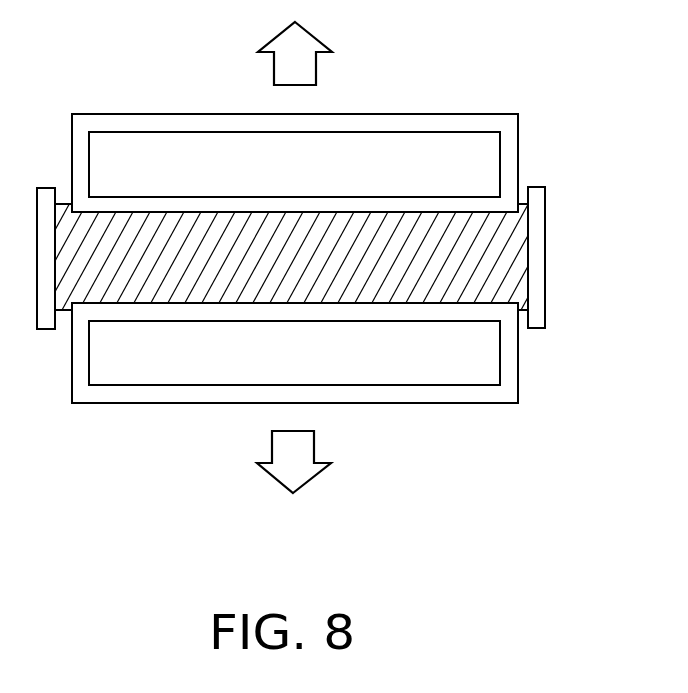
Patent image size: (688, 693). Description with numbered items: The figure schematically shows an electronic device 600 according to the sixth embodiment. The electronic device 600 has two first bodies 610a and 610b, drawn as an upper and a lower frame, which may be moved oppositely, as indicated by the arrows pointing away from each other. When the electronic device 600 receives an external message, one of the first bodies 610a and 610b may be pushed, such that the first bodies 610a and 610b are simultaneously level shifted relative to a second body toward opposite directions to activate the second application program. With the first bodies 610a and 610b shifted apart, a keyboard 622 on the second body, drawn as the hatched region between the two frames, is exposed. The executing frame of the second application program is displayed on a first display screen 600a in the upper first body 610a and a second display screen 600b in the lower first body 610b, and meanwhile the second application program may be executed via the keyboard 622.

The electronic device 600 is at (321, 278).
The first display screen 600a is at (441, 148).
The second display screen 600b is at (481, 358).
The first body 610a is at (507, 155).
The first body 610b is at (492, 393).
The keyboard 622 is at (512, 233).